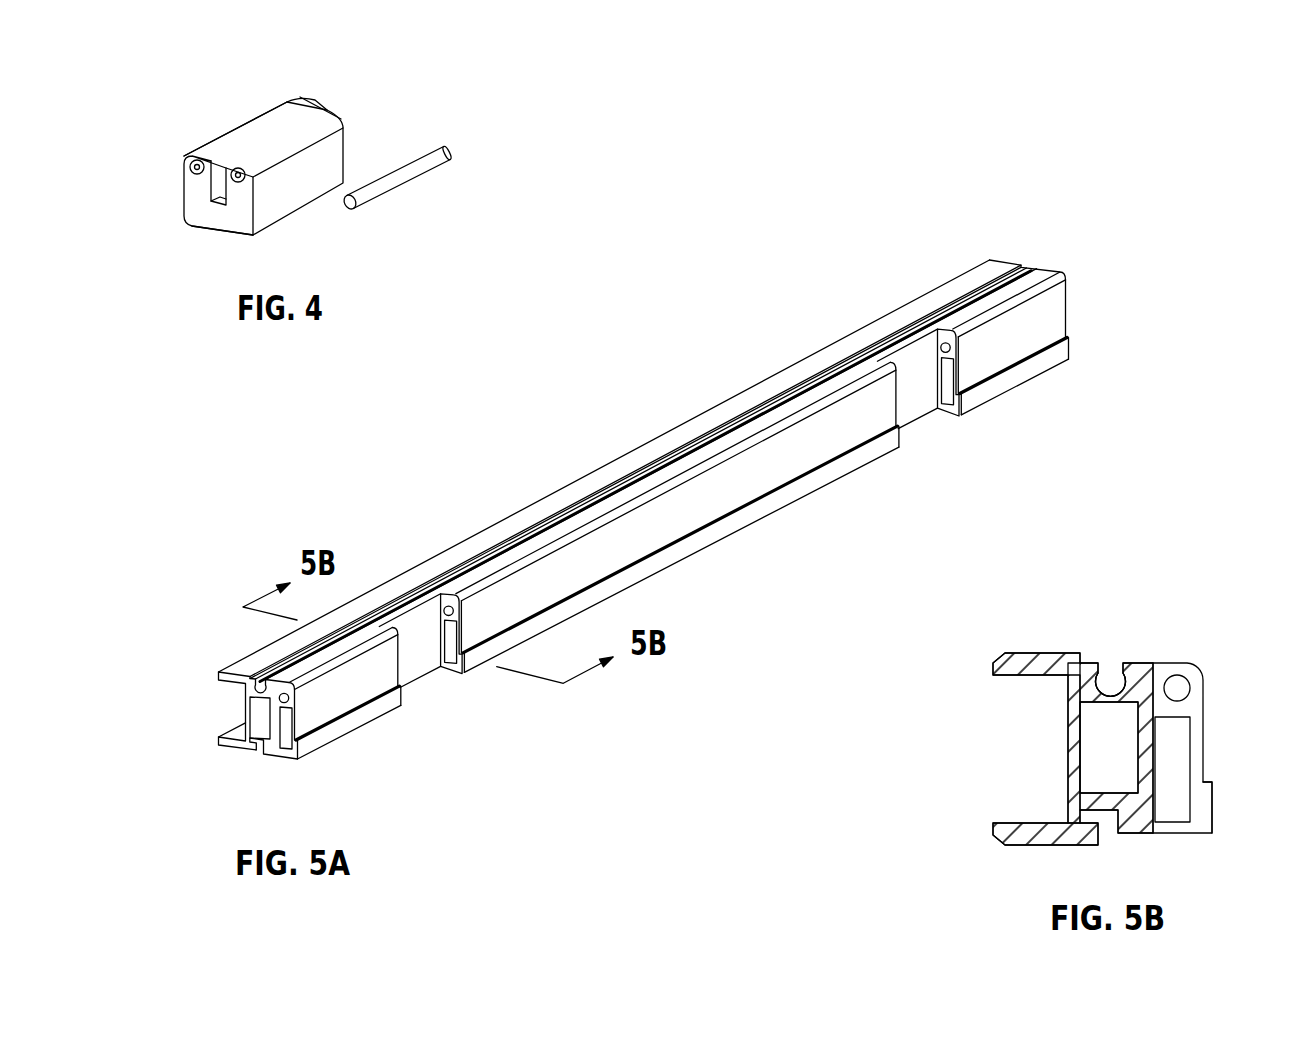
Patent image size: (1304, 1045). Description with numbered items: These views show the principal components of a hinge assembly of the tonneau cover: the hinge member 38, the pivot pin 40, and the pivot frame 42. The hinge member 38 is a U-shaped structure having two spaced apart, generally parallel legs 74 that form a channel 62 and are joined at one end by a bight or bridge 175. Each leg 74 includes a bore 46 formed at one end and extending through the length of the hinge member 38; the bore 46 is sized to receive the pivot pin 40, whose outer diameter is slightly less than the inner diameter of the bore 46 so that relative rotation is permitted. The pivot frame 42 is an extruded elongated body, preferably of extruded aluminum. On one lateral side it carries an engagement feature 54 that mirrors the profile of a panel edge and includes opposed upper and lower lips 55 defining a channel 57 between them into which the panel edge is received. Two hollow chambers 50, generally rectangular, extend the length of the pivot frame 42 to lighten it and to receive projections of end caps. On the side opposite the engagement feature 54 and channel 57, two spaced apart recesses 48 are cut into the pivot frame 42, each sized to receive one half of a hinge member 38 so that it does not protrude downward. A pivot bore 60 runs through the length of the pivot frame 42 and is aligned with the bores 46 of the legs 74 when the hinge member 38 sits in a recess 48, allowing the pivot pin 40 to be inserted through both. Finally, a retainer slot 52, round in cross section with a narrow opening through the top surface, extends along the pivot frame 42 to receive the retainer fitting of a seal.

In FIG. 4, the hinge member 38 is at (175, 133).
In FIG. 4, the pivot pin 40 is at (417, 153).
In FIG. 5A, the pivot frame 42 is at (688, 385).
In FIG. 5B, the pivot frame 42 is at (1043, 620).
In FIG. 4, the bore 46 is at (236, 168).
In FIG. 5A, the recess 48 is at (421, 686).
In FIG. 5B, the recess 48 is at (1208, 799).
In FIG. 5A, the hollow chamber 50 is at (280, 740).
In FIG. 5B, the hollow chamber 50 is at (1111, 759).
In FIG. 5A, the retainer slot 52 is at (252, 692).
In FIG. 5B, the retainer slot 52 is at (1110, 668).
In FIG. 5A, the engagement feature 54 is at (222, 705).
In FIG. 5B, the engagement feature 54 is at (1025, 737).
In FIG. 5B, the upper and lower lips 55 is at (1005, 657).
In FIG. 5A, the channel 57 is at (243, 713).
In FIG. 5B, the channel 57 is at (1068, 775).
In FIG. 5A, the pivot bore 60 is at (258, 691).
In FIG. 5B, the pivot bore 60 is at (1182, 690).
In FIG. 4, the channel 62 is at (217, 183).
In FIG. 4, the leg 74 is at (295, 96).
In FIG. 4, the bridge 175 is at (213, 222).